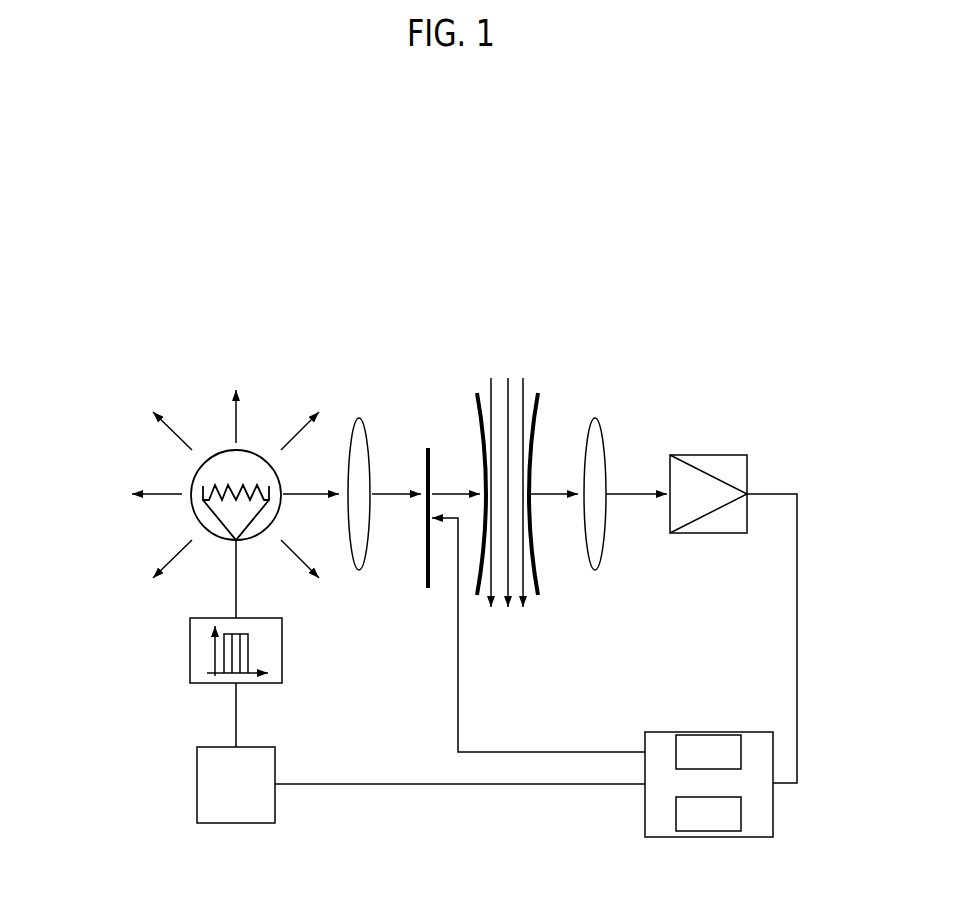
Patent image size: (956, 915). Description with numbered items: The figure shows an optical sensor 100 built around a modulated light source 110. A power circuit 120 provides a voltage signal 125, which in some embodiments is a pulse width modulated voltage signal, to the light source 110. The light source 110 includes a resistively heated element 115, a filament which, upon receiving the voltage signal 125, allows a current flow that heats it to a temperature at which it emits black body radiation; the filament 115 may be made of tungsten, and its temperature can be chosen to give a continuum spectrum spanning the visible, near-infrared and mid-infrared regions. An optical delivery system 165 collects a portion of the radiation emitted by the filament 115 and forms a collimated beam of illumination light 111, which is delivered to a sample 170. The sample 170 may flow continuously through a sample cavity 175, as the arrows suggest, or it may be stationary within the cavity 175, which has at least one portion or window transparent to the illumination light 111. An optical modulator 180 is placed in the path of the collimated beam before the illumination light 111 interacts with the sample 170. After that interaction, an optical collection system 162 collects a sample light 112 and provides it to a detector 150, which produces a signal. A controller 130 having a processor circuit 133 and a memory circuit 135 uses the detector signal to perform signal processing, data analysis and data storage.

The optical sensor 100 is at (173, 300).
The light source 110 is at (195, 478).
The illumination light 111 is at (293, 493).
The sample light 112 is at (547, 493).
The resistively heated element 115 is at (258, 488).
The power circuit 120 is at (258, 797).
The voltage signal 125 is at (190, 667).
The controller 130 is at (731, 795).
The processor circuit 133 is at (731, 765).
The memory circuit 135 is at (731, 826).
The detector 150 is at (716, 507).
The optical collection system 162 is at (595, 565).
The optical delivery system 165 is at (361, 420).
The sample 170 is at (508, 393).
The sample cavity 175 is at (534, 580).
The optical modulator 180 is at (427, 588).